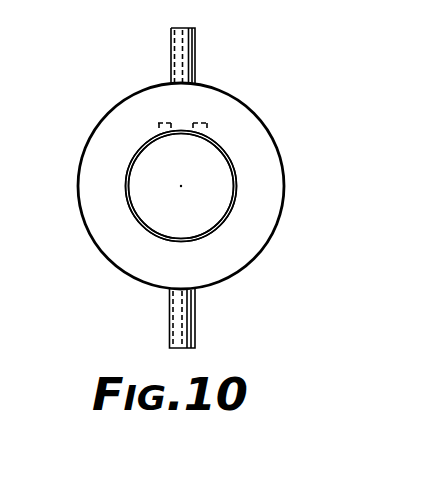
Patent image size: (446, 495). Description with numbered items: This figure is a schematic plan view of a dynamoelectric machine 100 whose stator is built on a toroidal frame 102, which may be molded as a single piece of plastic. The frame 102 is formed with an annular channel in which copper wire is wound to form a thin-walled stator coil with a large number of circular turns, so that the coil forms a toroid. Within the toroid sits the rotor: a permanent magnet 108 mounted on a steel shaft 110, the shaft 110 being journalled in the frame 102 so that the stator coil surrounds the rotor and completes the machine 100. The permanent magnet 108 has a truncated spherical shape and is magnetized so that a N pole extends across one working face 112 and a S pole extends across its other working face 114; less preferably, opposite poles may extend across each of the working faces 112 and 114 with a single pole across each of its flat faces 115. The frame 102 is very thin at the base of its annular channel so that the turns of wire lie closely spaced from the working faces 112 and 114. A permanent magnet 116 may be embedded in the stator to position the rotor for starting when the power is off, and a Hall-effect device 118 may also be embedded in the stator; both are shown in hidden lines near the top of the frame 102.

The dynamoelectric machine 100 is at (277, 121).
The toroidal frame 102 is at (102, 137).
The permanent magnet 108 is at (222, 212).
The steel shaft 110 is at (197, 34).
The working face 112 is at (127, 192).
The working face 114 is at (233, 177).
The flat face 115 is at (158, 212).
The magnet 116 is at (209, 122).
The Hall-effect device 118 is at (157, 122).